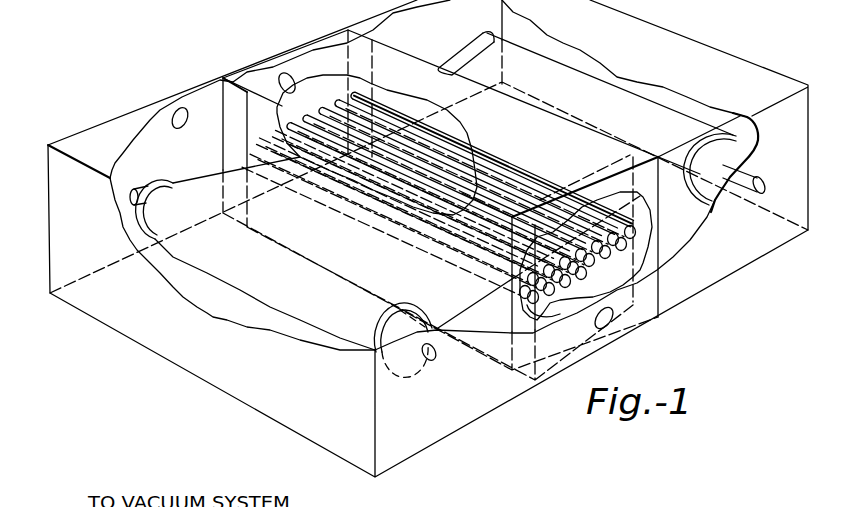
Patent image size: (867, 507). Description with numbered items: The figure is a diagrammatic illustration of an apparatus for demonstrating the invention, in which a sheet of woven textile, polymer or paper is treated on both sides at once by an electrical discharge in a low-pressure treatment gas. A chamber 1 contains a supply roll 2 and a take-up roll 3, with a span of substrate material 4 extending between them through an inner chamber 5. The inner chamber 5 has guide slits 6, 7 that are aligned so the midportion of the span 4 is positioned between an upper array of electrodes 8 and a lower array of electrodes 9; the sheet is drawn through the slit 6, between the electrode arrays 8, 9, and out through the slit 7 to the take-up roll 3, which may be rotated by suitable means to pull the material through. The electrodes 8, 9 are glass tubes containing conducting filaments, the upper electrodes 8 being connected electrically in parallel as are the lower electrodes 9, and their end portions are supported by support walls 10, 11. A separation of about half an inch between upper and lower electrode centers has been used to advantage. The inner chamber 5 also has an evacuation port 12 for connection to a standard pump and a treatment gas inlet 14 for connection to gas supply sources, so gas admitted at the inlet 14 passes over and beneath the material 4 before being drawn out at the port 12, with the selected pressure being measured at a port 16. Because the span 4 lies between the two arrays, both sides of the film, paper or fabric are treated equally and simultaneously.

The chamber 1 is at (694, 32).
The supply roll 2 is at (393, 340).
The take-up roll 3 is at (718, 198).
The span of substrate material 4 is at (450, 288).
The inner chamber 5 is at (540, 128).
The guide slit 6 is at (275, 162).
The guide slit 7 is at (387, 108).
The upper array of electrodes 8 is at (590, 228).
The lower array of electrodes 9 is at (548, 299).
The support wall 10 is at (632, 154).
The support wall 11 is at (375, 40).
The evacuation port 12 is at (280, 74).
The treatment gas inlet 14 is at (612, 324).
The port 16 is at (177, 130).